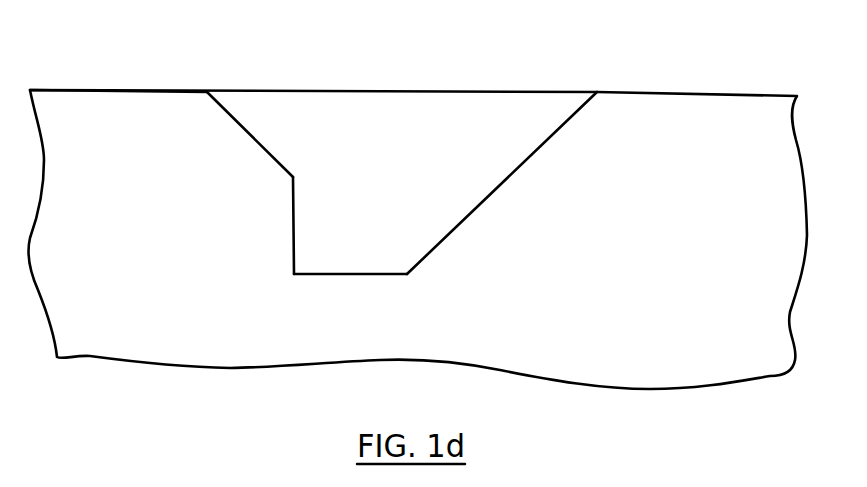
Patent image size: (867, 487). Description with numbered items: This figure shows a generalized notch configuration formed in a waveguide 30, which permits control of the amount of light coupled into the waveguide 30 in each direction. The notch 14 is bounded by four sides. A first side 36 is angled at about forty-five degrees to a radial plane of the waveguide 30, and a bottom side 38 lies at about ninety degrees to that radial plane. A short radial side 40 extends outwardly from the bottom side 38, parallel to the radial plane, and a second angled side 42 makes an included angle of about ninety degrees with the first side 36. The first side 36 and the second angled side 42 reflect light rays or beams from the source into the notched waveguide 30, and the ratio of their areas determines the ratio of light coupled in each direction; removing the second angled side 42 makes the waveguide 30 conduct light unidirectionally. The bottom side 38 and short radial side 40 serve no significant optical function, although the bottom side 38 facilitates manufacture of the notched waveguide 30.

The notch 14 is at (385, 113).
The waveguide 30 is at (681, 122).
The first side 36 is at (545, 138).
The bottom side 38 is at (373, 273).
The short radial side 40 is at (294, 203).
The second angled side 42 is at (245, 128).